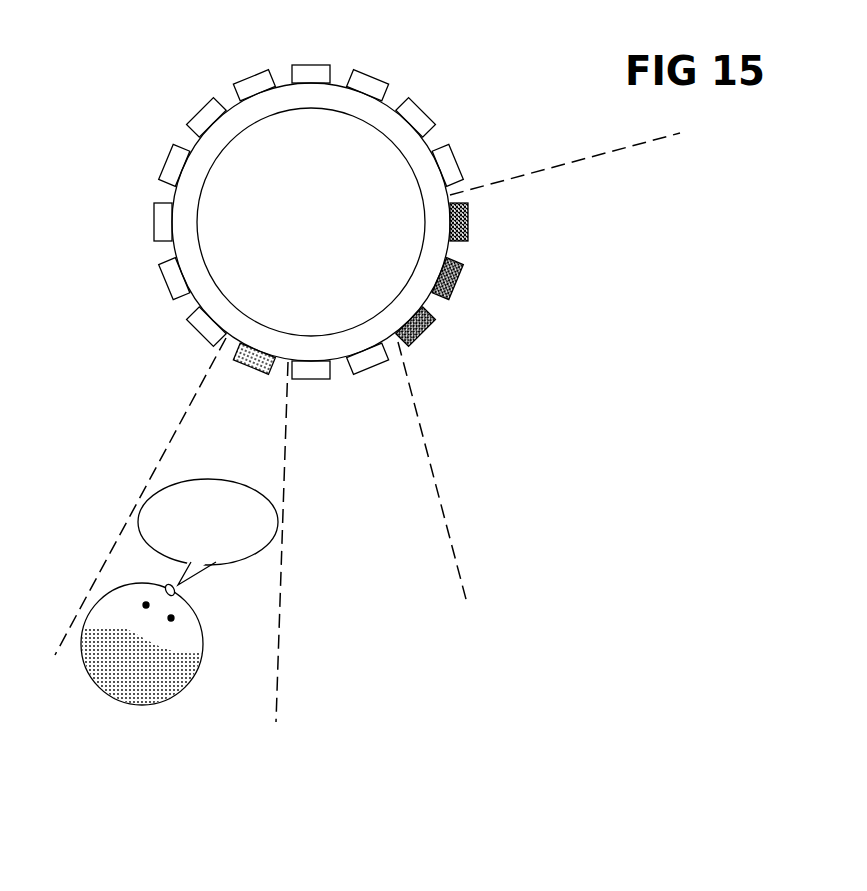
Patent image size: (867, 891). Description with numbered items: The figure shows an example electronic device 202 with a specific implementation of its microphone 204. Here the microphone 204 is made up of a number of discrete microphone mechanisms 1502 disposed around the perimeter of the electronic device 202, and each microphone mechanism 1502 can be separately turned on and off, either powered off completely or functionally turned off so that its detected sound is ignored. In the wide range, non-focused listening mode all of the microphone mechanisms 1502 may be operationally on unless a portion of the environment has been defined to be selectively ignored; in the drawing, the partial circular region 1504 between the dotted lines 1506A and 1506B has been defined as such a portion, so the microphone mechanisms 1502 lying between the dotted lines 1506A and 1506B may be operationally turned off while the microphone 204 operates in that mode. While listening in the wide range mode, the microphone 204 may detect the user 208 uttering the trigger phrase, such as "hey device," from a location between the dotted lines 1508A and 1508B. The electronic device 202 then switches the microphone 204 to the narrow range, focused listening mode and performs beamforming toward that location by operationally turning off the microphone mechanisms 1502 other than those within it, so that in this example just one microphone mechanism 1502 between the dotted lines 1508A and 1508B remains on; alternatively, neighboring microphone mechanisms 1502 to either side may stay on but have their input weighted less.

The electronic device 202 is at (311, 222).
The microphone 204 is at (396, 108).
The user 208 is at (167, 702).
The microphone mechanism 1502 is at (321, 65).
The partial circular region 1504 is at (352, 224).
The dotted line 1506A is at (558, 167).
The dotted line 1506B is at (457, 563).
The dotted line 1508A is at (278, 683).
The dotted line 1508B is at (110, 553).